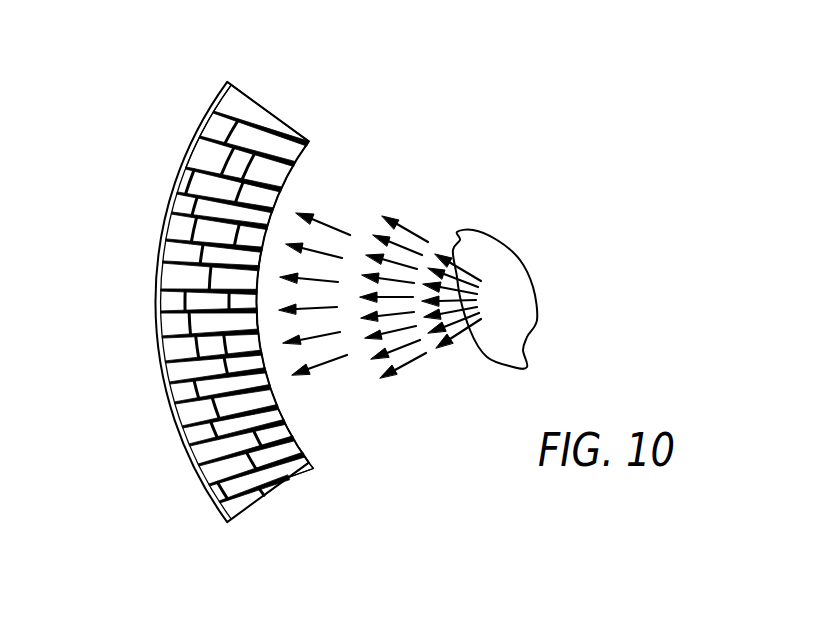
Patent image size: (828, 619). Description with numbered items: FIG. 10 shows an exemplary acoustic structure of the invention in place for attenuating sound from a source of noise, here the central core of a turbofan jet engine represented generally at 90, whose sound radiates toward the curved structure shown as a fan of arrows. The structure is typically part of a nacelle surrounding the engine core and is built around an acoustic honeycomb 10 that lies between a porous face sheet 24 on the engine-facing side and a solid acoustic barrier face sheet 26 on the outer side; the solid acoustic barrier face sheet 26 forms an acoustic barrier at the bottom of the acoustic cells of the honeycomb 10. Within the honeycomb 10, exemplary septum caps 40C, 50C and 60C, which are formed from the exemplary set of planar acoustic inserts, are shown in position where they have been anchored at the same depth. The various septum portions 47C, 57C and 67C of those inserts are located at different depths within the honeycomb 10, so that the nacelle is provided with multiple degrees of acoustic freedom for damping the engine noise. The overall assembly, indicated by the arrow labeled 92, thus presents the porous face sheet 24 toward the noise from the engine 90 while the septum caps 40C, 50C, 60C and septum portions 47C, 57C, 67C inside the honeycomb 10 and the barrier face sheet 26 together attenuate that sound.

The acoustic honeycomb 10 is at (252, 97).
The porous face sheet 24 is at (285, 172).
The solid acoustic barrier face sheet 26 is at (157, 298).
The septum cap 40C is at (228, 322).
The septum portion 47C is at (285, 138).
The septum cap 50C is at (213, 262).
The septum portion 57C is at (212, 143).
The septum cap 60C is at (280, 478).
The septum portion 67C is at (233, 131).
The turbofan jet engine 90 is at (517, 290).
The ultrasound system / beams 92 is at (124, 407).